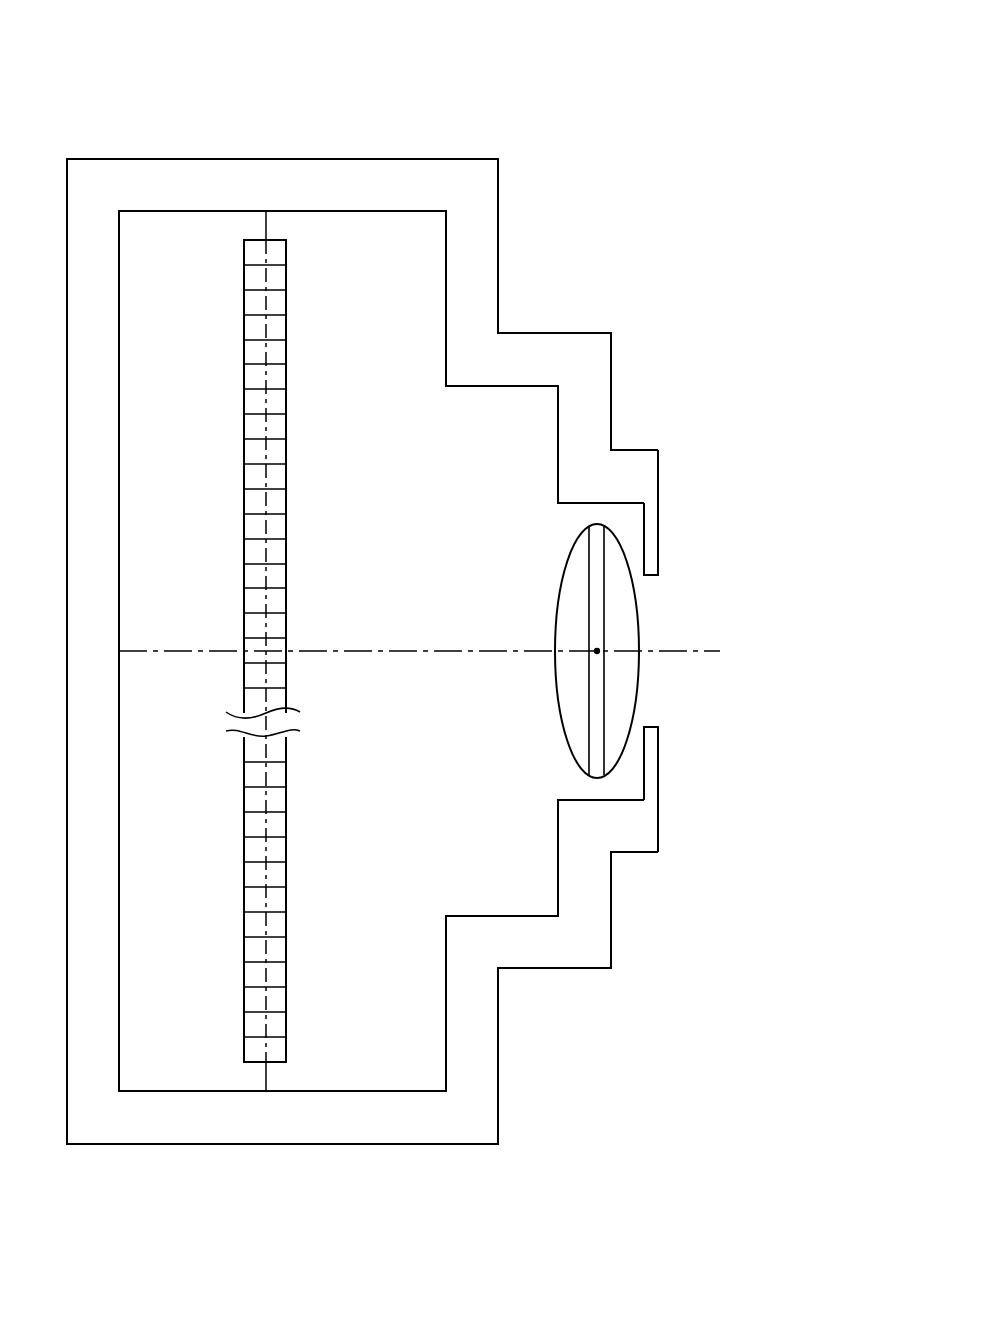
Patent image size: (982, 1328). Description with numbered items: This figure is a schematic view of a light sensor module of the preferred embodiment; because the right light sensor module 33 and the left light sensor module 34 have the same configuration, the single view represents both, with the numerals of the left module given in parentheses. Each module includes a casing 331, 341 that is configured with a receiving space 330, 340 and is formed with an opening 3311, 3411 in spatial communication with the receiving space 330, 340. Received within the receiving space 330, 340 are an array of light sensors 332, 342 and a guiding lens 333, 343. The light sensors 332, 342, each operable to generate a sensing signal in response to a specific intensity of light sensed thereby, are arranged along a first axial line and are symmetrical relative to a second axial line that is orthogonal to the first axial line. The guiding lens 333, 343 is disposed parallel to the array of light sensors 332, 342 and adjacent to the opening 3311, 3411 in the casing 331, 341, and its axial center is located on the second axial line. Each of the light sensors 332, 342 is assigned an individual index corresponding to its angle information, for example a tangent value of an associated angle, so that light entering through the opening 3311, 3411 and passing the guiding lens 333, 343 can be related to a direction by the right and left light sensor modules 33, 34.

The right light sensor module 33 is at (451, 621).
The left light sensor module 34 is at (567, 124).
The receiving space 330 is at (357, 590).
The receiving space 340 is at (150, 228).
The casing 331 is at (357, 578).
The casing 341 is at (425, 172).
The array of light sensors 332 is at (217, 549).
The array of light sensors 342 is at (247, 978).
The guiding lens 333 is at (699, 699).
The guiding lens 343 is at (620, 763).
The opening 3311 is at (744, 651).
The opening 3411 is at (643, 605).